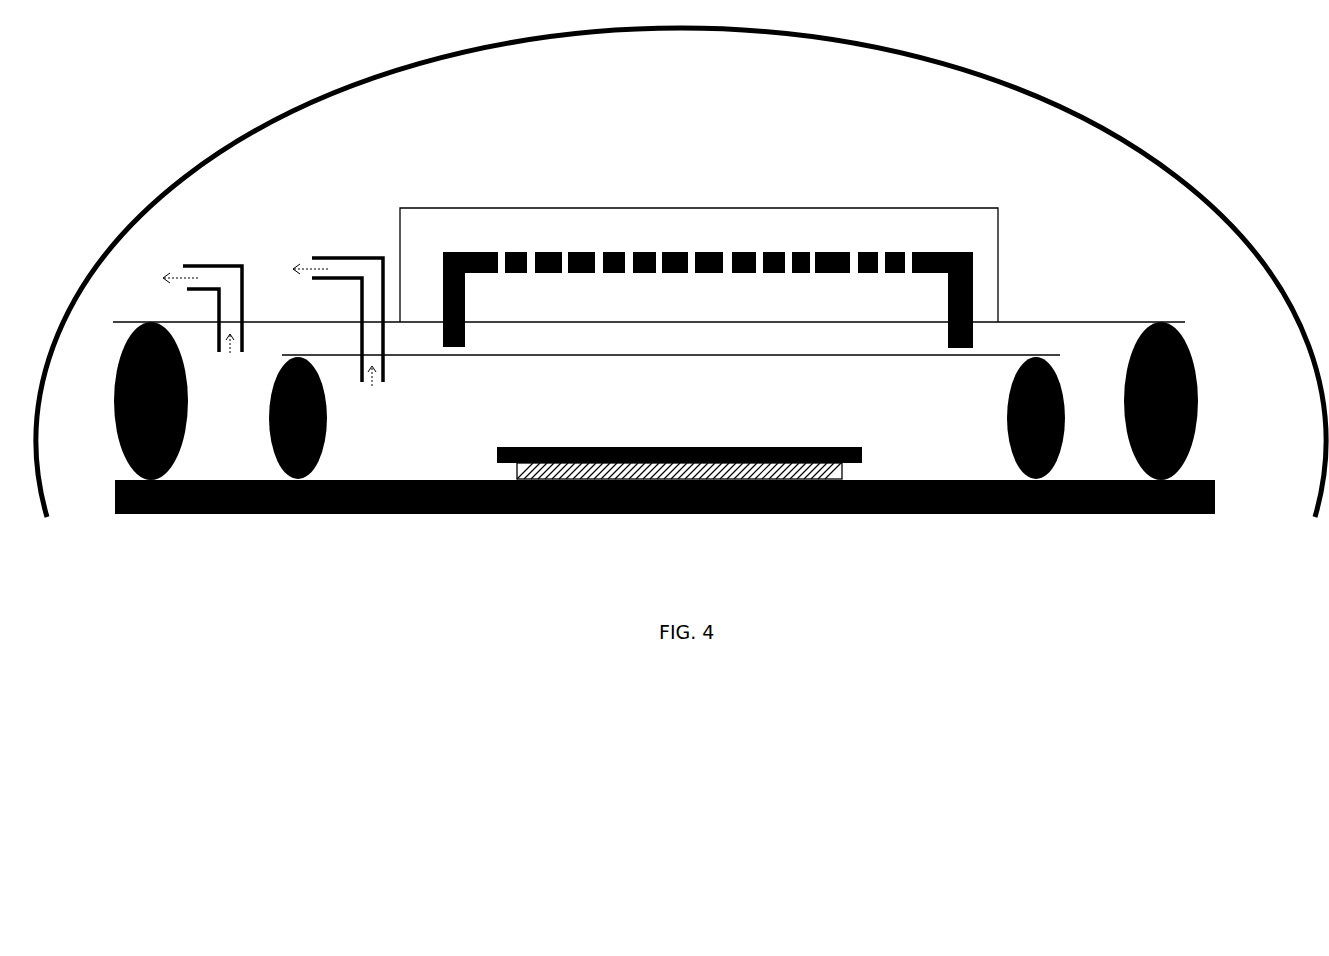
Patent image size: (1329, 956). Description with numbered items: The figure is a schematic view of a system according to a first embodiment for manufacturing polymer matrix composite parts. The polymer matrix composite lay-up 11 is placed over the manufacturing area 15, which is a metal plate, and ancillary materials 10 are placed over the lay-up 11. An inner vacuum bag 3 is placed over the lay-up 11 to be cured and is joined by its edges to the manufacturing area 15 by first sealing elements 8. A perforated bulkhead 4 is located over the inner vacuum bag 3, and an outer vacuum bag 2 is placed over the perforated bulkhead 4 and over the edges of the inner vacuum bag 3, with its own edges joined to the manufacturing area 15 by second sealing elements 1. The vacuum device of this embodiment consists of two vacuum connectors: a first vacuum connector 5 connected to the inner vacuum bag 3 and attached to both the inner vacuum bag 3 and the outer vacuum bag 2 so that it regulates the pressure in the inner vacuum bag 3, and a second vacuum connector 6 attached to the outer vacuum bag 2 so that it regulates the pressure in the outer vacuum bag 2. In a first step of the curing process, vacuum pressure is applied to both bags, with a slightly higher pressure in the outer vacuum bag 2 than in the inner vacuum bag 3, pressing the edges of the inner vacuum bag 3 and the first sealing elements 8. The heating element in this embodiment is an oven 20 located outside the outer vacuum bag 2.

The second sealing elements 1 is at (115, 432).
The outer vacuum bag 2 is at (613, 208).
The inner vacuum bag 3 is at (980, 355).
The perforated bulkhead 4 is at (837, 248).
The first vacuum connector 5 is at (330, 255).
The second vacuum connector 6 is at (202, 263).
The first sealing elements 8 is at (280, 514).
The ancillary materials 10 is at (862, 455).
The lay-up to be cured 11 is at (842, 471).
The manufacturing area 15 is at (933, 514).
The oven 20 is at (1212, 207).